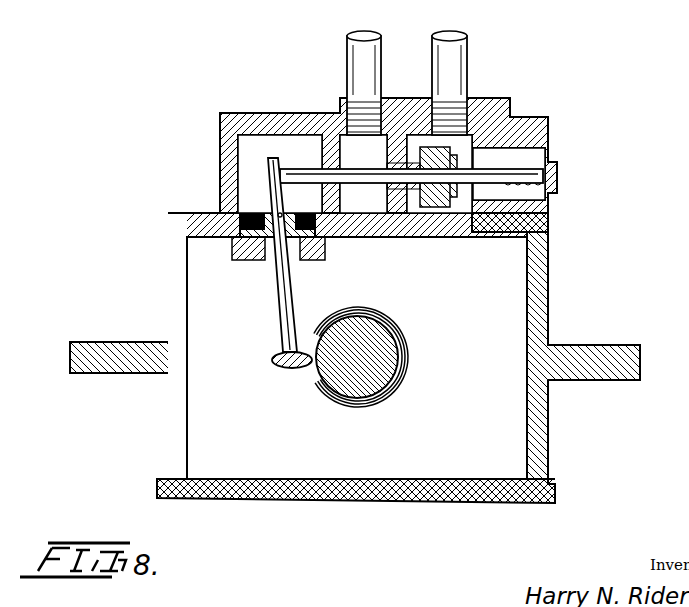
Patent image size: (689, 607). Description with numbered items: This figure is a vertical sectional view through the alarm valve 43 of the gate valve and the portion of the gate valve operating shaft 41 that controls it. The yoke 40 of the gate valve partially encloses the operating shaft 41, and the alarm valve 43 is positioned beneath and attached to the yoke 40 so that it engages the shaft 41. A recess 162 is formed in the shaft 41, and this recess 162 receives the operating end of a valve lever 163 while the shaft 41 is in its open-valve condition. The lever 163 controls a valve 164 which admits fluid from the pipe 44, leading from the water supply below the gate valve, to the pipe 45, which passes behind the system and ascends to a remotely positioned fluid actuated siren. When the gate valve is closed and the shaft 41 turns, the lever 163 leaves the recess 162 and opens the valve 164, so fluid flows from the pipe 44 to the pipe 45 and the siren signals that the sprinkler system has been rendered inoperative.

The yoke 40 is at (542, 310).
The gate valve operating shaft 41 is at (385, 352).
The alarm valve 43 is at (548, 218).
The pipe 44 is at (468, 70).
The pipe 45 is at (382, 70).
The recess 162 is at (373, 315).
The valve lever 163 is at (287, 323).
The valve 164 is at (437, 205).